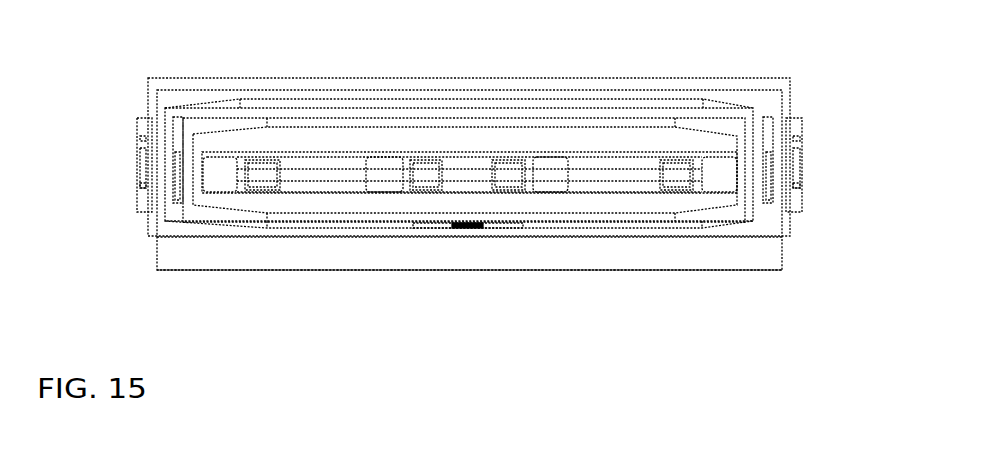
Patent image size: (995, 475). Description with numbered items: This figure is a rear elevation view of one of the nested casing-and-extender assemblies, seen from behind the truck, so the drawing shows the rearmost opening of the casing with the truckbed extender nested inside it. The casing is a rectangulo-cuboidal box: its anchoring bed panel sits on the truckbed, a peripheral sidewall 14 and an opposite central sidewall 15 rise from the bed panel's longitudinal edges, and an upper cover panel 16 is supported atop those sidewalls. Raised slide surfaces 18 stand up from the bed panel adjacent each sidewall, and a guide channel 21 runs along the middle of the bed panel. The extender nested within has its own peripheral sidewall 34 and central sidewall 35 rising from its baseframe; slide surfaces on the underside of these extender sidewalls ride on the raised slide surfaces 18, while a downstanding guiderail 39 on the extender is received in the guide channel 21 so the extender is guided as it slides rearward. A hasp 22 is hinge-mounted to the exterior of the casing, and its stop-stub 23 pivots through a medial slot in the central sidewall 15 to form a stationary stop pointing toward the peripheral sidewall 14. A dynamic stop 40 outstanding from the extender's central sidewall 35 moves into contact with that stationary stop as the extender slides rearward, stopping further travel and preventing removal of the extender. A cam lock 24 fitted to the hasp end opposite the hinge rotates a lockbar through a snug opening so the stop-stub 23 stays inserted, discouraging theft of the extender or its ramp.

The peripheral sidewall 14 is at (158, 182).
The central sidewall 15 is at (778, 177).
The upper cover panel 16 is at (240, 86).
The raised slide surfaces 18 is at (168, 232).
The guide channel 21 is at (452, 228).
The hasp 22 is at (147, 122).
The stop-stub 23 is at (170, 130).
The cam lock 24 is at (173, 160).
The peripheral sidewall 34 is at (188, 190).
The central sidewall 35 is at (750, 197).
The guiderail 39 is at (483, 228).
The dynamic stop 40 is at (180, 141).